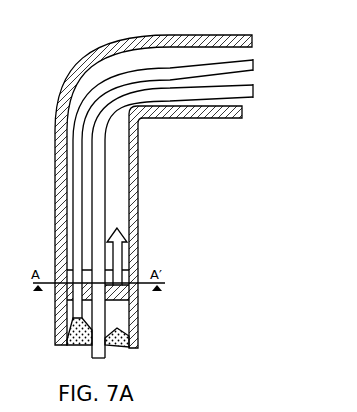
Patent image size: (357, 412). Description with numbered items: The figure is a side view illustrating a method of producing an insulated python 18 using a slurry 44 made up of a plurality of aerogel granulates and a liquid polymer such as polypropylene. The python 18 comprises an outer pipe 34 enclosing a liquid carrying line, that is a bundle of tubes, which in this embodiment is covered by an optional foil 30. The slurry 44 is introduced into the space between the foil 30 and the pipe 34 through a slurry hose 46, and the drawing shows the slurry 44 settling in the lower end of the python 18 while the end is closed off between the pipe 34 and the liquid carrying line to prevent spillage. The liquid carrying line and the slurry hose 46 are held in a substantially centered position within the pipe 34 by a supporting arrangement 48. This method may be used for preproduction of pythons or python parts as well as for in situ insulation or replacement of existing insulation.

The python 18 is at (35, 87).
The pipe 34 is at (70, 72).
The slurry hose 46 is at (254, 63).
The foil 30 is at (254, 91).
The supporting arrangement 48 is at (118, 292).
The slurry 44 is at (118, 333).